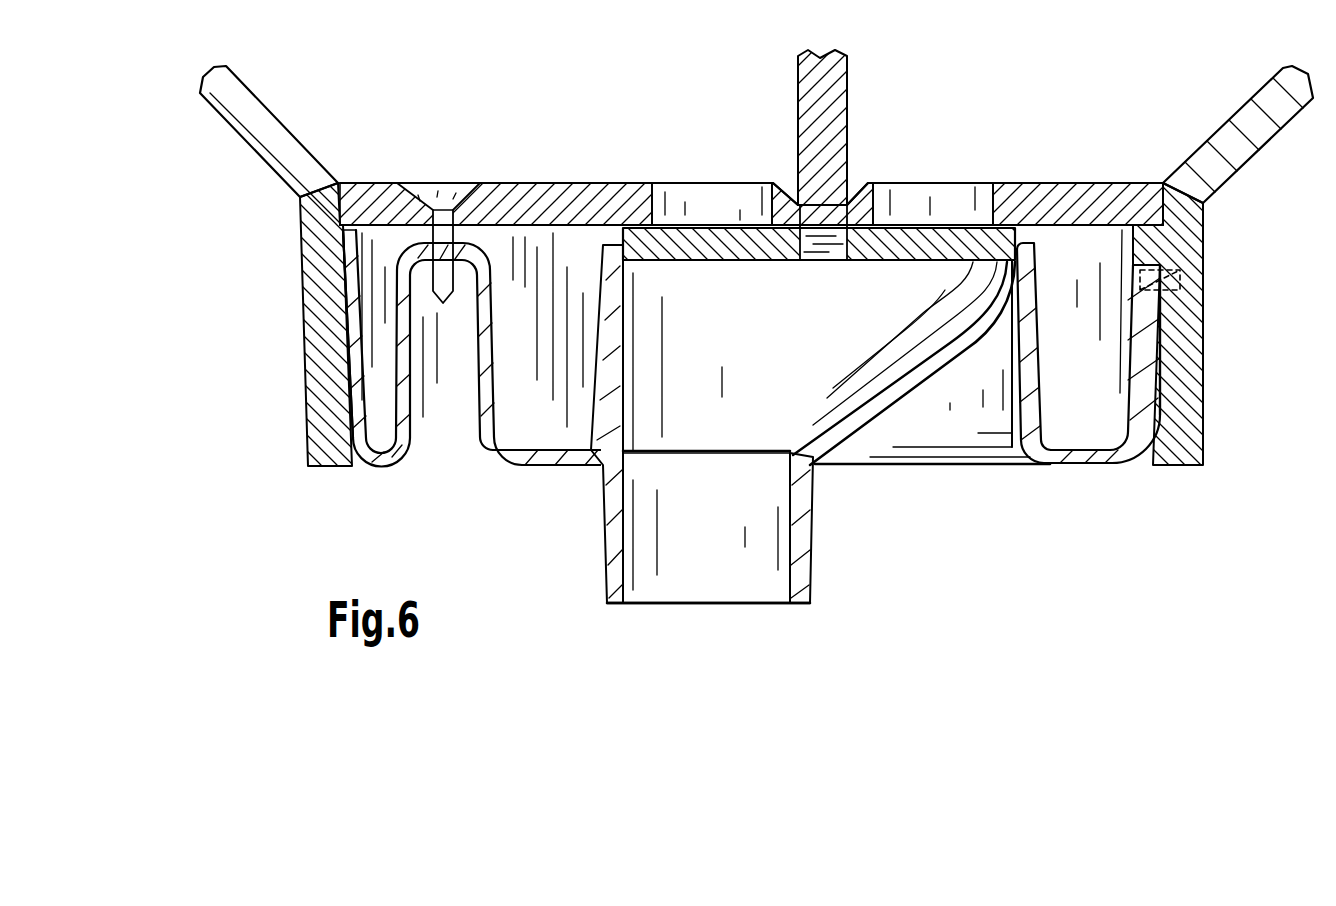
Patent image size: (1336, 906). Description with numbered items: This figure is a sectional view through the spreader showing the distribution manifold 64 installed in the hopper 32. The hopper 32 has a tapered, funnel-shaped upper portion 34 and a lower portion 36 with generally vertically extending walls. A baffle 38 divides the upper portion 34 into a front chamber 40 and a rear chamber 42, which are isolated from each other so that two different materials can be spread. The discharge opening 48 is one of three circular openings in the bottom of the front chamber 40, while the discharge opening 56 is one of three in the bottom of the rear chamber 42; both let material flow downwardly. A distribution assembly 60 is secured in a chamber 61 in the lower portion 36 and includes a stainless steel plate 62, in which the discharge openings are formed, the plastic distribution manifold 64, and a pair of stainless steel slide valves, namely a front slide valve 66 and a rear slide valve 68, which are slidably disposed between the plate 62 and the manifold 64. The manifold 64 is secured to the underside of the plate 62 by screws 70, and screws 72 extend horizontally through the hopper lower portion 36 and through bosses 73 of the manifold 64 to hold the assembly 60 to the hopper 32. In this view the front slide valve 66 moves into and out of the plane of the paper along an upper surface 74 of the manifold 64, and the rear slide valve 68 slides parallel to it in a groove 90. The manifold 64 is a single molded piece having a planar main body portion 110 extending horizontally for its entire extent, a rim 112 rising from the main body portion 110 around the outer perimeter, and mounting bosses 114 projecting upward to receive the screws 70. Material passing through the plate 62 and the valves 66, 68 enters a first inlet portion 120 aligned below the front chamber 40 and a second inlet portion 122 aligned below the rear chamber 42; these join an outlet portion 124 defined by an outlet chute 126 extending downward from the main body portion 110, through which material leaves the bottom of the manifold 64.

The hopper 32 is at (245, 147).
The upper portion 34 is at (1257, 147).
The lower portion 36 is at (1200, 433).
The baffle 38 is at (797, 103).
The front chamber 40 is at (349, 93).
The rear chamber 42 is at (904, 85).
The discharge opening 48 is at (763, 207).
The discharge opening 56 is at (992, 208).
The distribution assembly 60 is at (1032, 118).
The chamber 61 is at (1140, 420).
The plate 62 is at (1058, 176).
The distribution manifold 64 is at (953, 468).
The front slide valve 66 is at (693, 223).
The rear slide valve 68 is at (928, 220).
The screws 70 is at (433, 290).
The screws 72 is at (1187, 280).
The bosses 73 is at (1135, 250).
The upper surface 74 is at (817, 254).
The groove 90 is at (1002, 255).
The main body portion 110 is at (540, 458).
The rim 112 is at (357, 357).
The mounting bosses 114 is at (482, 360).
The first inlet portion 120 is at (623, 363).
The second inlet portion 122 is at (957, 347).
The outlet portion 124 is at (627, 567).
The outlet chute 126 is at (757, 605).